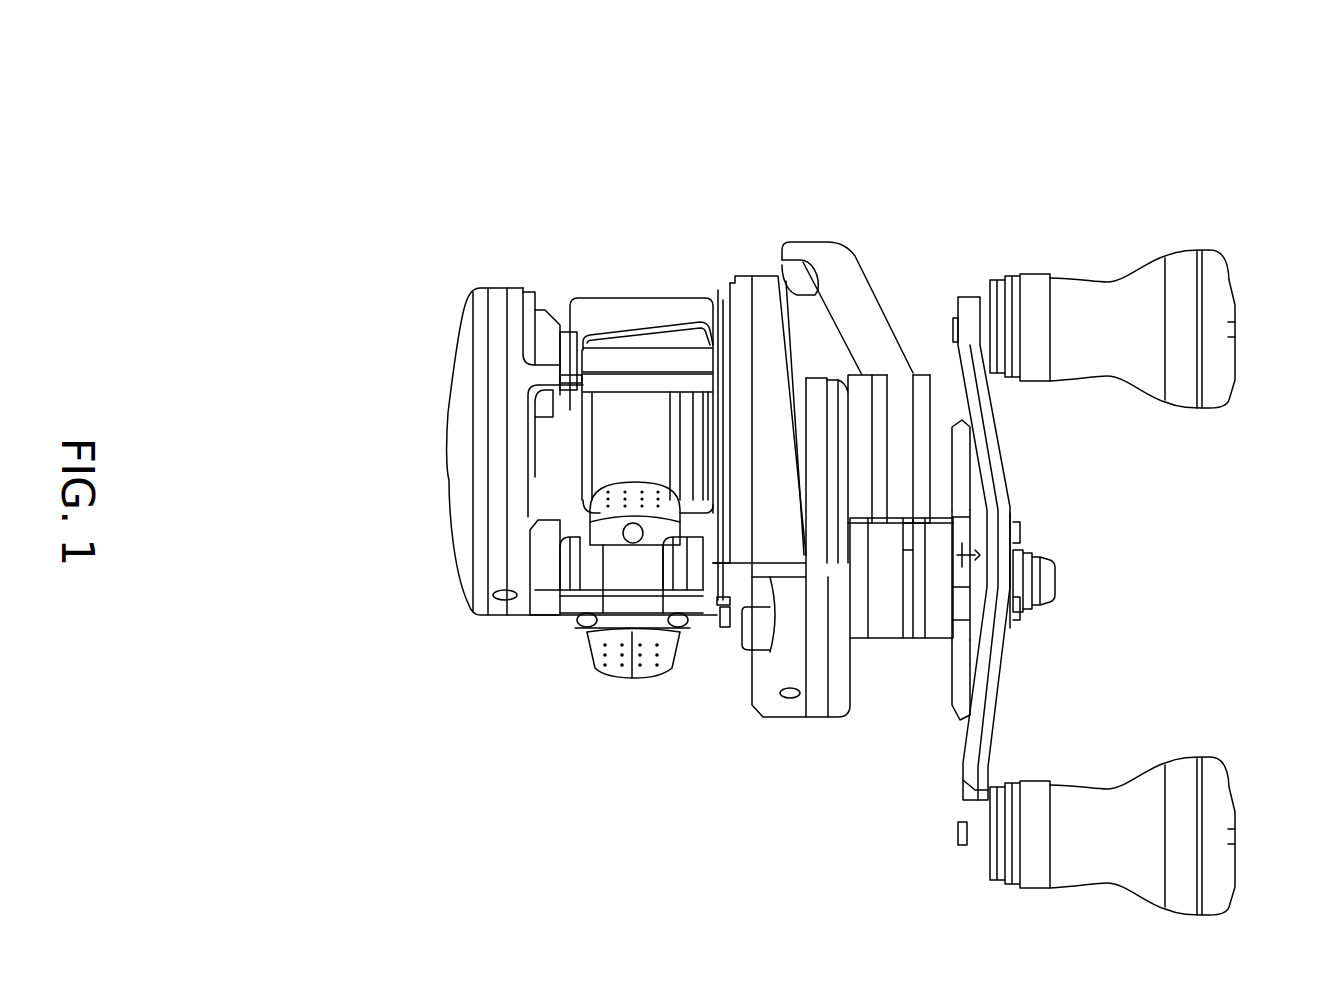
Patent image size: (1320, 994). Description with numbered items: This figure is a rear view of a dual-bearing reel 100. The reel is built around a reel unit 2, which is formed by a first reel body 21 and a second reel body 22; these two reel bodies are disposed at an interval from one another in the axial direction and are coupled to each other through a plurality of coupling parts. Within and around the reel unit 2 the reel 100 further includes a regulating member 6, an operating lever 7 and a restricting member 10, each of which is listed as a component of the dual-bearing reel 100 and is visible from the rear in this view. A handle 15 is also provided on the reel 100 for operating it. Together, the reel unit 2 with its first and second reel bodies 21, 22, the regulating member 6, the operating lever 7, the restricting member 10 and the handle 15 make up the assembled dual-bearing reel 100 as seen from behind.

The dual-bearing reel 100 is at (581, 126).
The reel unit 2 is at (740, 248).
The first reel body 21 is at (734, 263).
The second reel body 22 is at (500, 288).
The operating lever 7 is at (853, 238).
The regulating member 6 is at (862, 520).
The restricting member 10 is at (933, 487).
The handle 15 is at (1207, 247).